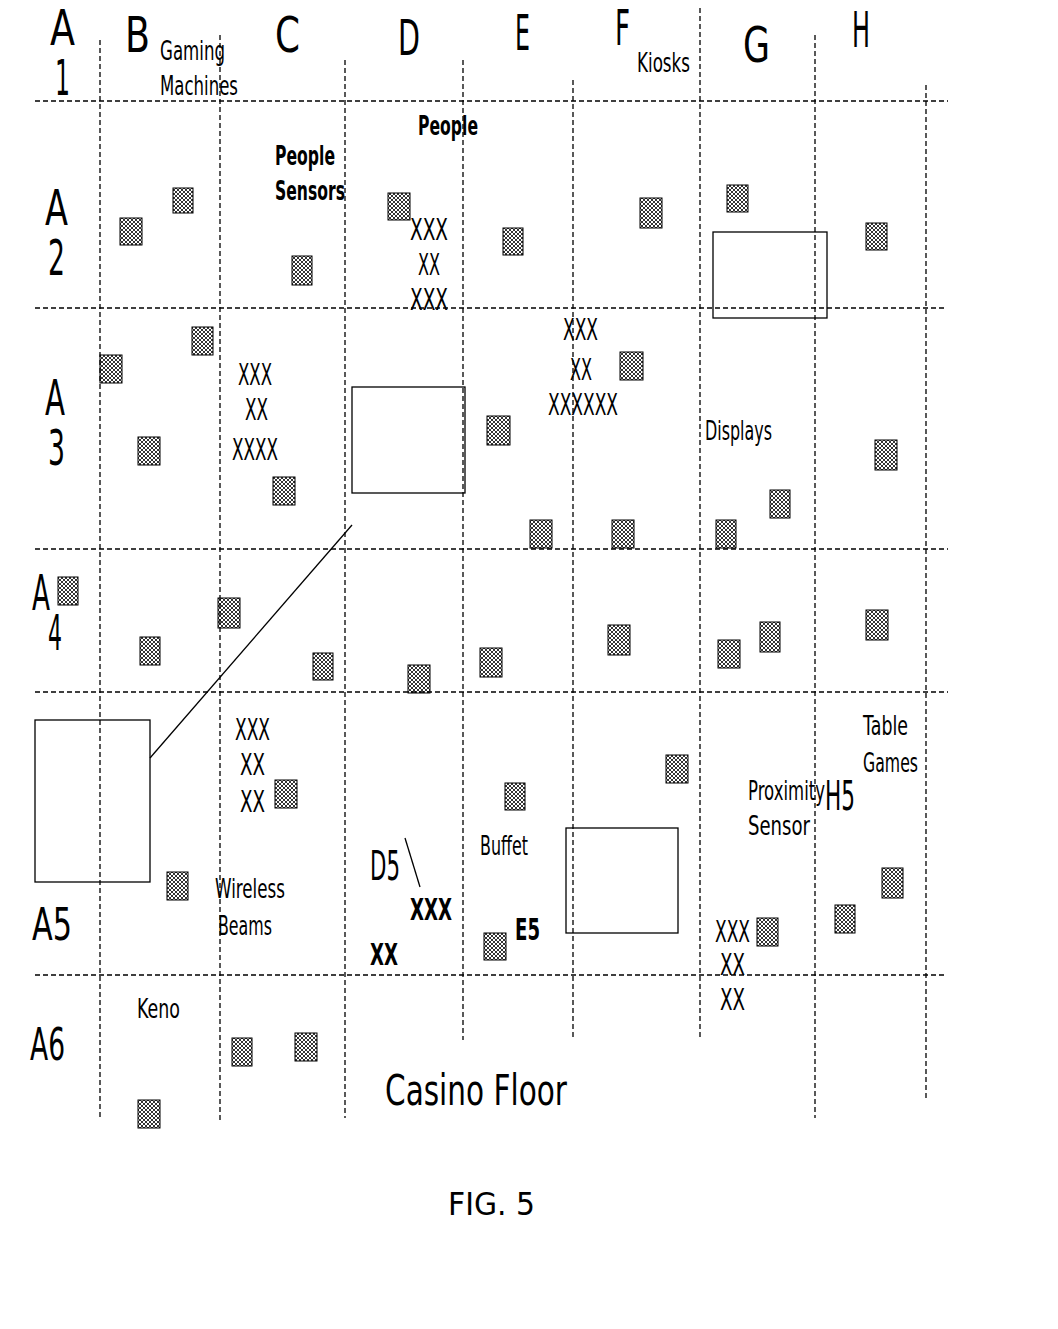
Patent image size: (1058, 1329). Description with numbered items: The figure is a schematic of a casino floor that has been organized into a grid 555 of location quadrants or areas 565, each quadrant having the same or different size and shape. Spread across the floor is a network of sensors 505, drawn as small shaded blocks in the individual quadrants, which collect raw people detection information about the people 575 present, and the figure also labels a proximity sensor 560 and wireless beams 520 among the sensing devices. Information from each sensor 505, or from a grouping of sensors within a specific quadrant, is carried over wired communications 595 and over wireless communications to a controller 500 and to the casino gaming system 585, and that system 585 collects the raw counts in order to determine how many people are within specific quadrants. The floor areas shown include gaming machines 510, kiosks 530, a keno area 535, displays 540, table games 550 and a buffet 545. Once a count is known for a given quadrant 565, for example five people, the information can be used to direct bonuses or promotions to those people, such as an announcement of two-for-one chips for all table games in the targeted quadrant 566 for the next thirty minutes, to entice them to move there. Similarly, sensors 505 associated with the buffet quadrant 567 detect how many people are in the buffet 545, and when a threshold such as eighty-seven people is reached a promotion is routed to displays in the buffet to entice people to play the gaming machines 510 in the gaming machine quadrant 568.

The controller 500 is at (800, 257).
The sensor 505 is at (128, 218).
The casino gaming machine 510 is at (185, 188).
The wireless beams 520 is at (305, 1038).
The kiosk sensor 530 is at (652, 200).
The keno sensor 535 is at (146, 1102).
The displays 540 is at (770, 625).
The buffet 545 is at (493, 935).
The table games sensor 550 is at (893, 870).
The grid 555 is at (864, 94).
The proximity sensor 560 is at (767, 920).
The location quadrant 565 is at (416, 800).
The targeted quadrant 566 is at (869, 717).
The buffet quadrant 567 is at (544, 879).
The gaming machine quadrant 568 is at (169, 265).
The people 575 is at (431, 215).
The casino gaming system 585 is at (83, 755).
The wired communications 595 is at (266, 626).